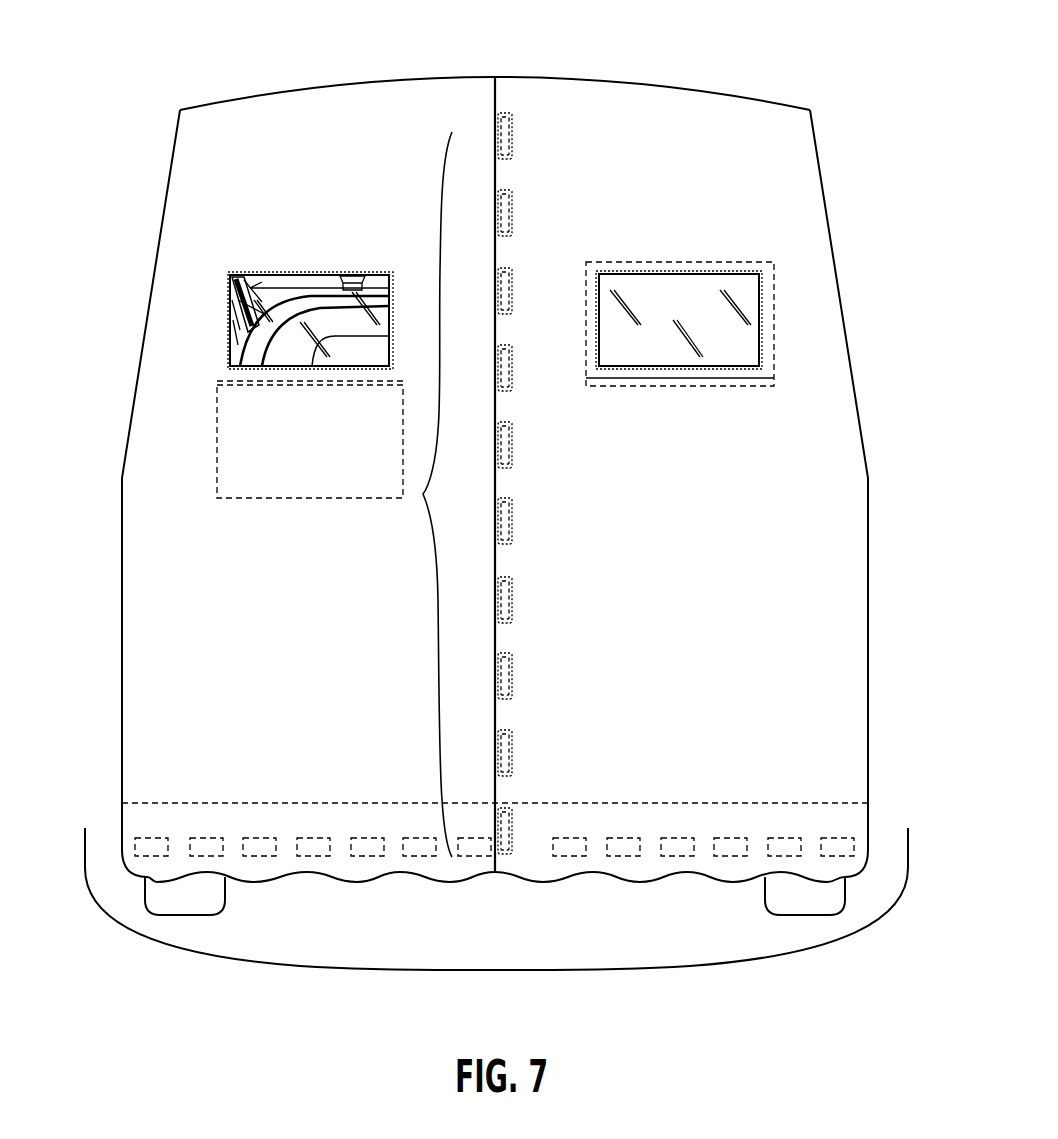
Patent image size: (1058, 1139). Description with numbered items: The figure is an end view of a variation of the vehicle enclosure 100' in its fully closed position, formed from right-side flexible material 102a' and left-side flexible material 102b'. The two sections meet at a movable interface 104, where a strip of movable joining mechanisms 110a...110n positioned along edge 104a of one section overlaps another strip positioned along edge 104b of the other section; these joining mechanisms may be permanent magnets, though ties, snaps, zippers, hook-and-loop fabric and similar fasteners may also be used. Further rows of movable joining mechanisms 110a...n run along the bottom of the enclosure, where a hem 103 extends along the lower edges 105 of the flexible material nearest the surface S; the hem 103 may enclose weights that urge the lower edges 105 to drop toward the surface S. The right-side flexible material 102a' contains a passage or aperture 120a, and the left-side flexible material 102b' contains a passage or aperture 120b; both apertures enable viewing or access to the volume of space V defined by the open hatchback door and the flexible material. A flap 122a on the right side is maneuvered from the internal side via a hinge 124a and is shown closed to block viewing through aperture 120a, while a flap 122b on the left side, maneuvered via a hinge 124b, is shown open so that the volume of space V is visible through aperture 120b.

The vehicle enclosure 100' is at (495, 63).
The flexible material 102a' is at (876, 493).
The flexible material 102b' is at (123, 493).
The movable interface 104 is at (492, 325).
The edge 104a is at (490, 98).
The edge 104b is at (500, 173).
The movable joining mechanisms 110a...110n is at (423, 494).
The movable joining mechanisms 110a...n is at (477, 803).
The passage or aperture 120a is at (728, 315).
The passage or aperture 120b is at (228, 323).
The flap 122a is at (718, 262).
The flap 122b is at (217, 437).
The hinge 124a is at (774, 378).
The hinge 124b is at (217, 381).
The hem 103 is at (130, 810).
The lower edges 105 is at (257, 885).
The surface S is at (713, 948).
The volume of space V is at (300, 292).